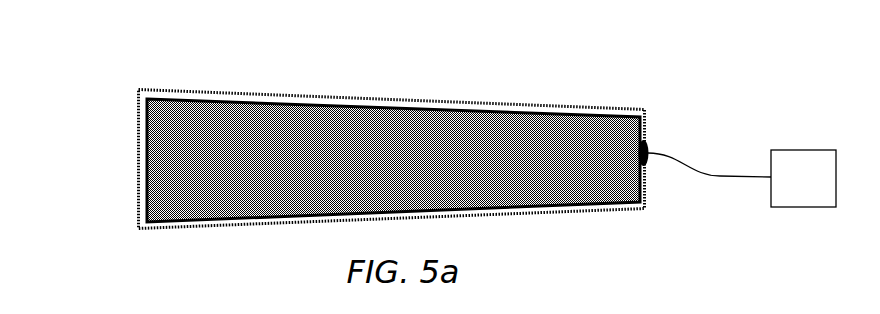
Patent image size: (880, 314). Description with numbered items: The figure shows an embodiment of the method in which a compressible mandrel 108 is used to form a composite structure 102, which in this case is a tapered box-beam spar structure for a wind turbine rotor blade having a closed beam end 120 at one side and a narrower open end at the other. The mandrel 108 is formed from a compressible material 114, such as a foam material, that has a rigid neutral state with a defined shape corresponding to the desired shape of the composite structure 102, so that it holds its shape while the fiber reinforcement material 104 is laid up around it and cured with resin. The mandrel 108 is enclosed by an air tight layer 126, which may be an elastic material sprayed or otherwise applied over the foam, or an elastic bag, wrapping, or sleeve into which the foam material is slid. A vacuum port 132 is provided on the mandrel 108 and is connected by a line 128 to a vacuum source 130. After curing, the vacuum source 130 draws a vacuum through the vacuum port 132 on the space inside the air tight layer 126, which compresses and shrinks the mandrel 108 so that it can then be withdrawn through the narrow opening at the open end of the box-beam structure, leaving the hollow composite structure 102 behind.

The composite structure 102 is at (428, 151).
The fiber reinforcement material 104 is at (393, 145).
The mandrel 108 is at (517, 185).
The compressible material 114 is at (363, 128).
The closed beam end 120 is at (137, 200).
The air tight layer 126 is at (566, 115).
The electrical lead wire 128 is at (733, 175).
The vacuum source 130 is at (799, 207).
The vacuum port 132 is at (646, 168).